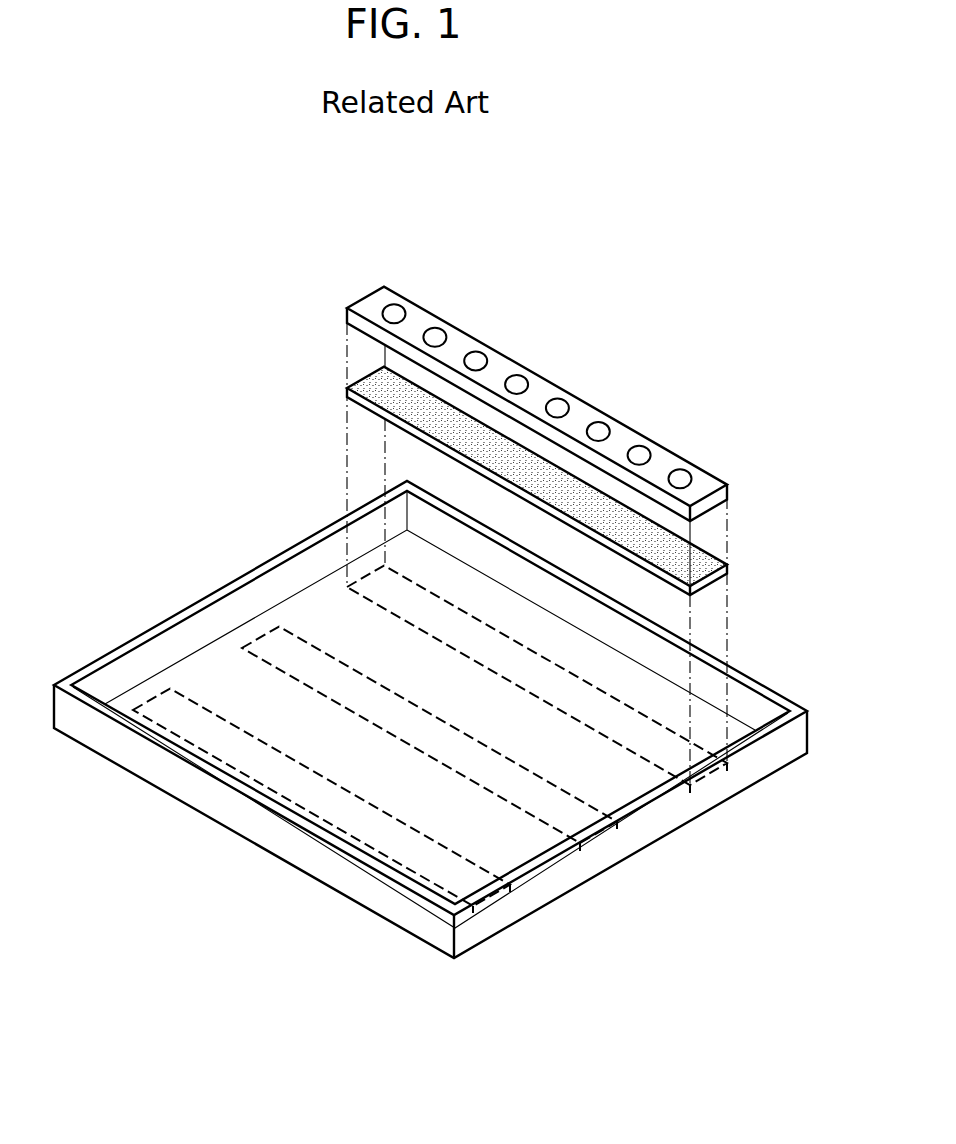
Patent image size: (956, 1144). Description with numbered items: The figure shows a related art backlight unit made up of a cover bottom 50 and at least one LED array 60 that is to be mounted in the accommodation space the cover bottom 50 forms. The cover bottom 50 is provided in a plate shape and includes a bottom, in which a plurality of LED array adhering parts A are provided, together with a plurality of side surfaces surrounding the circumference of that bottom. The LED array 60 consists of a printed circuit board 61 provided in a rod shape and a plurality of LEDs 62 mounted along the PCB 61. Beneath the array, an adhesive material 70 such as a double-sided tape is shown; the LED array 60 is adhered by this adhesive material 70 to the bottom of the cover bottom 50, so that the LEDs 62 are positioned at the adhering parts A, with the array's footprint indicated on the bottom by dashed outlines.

The cover bottom 50 is at (623, 838).
The LED array 60 is at (554, 404).
The printed circuit board 61 is at (703, 486).
The LEDs 62 is at (551, 396).
The adhesive material 70 is at (703, 568).